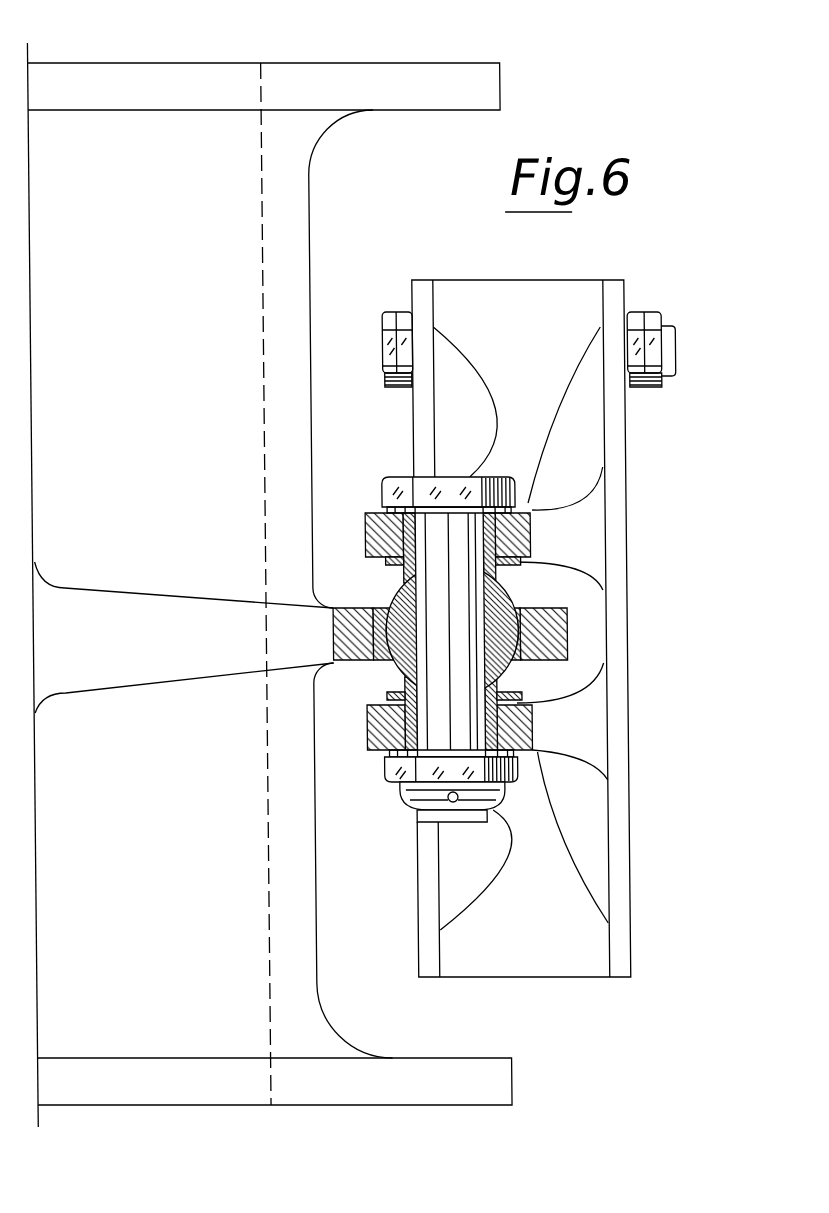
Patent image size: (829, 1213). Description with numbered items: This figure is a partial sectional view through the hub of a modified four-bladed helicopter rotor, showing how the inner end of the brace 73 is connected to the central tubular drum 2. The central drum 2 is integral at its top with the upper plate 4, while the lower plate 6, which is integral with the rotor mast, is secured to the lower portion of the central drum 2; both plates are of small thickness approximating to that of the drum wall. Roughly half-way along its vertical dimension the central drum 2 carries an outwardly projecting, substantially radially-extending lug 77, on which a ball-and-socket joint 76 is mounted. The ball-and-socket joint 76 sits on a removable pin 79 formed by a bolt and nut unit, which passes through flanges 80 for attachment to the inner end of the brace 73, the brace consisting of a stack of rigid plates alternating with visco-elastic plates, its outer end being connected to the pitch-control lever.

The central drum 2 is at (292, 258).
The upper plate 4 is at (454, 80).
The lower plate 6 is at (416, 1077).
The brace 73 is at (644, 492).
The ball-and-socket joint 76 is at (394, 610).
The lug 77 is at (174, 620).
The removable pin 79 is at (427, 649).
The flanges 80 is at (523, 523).